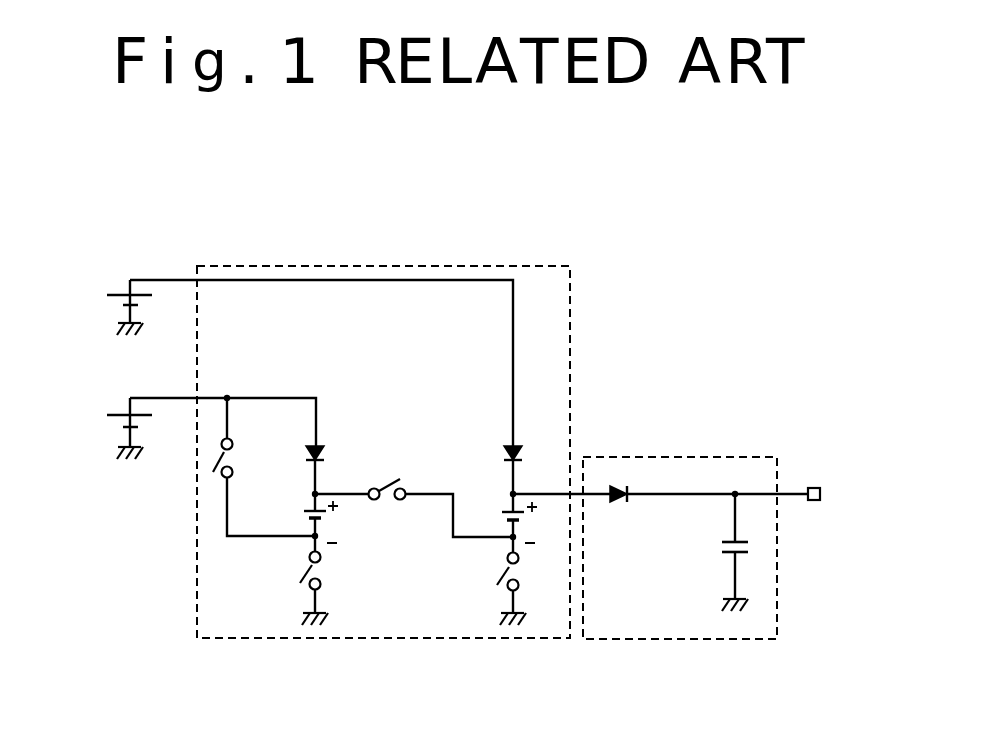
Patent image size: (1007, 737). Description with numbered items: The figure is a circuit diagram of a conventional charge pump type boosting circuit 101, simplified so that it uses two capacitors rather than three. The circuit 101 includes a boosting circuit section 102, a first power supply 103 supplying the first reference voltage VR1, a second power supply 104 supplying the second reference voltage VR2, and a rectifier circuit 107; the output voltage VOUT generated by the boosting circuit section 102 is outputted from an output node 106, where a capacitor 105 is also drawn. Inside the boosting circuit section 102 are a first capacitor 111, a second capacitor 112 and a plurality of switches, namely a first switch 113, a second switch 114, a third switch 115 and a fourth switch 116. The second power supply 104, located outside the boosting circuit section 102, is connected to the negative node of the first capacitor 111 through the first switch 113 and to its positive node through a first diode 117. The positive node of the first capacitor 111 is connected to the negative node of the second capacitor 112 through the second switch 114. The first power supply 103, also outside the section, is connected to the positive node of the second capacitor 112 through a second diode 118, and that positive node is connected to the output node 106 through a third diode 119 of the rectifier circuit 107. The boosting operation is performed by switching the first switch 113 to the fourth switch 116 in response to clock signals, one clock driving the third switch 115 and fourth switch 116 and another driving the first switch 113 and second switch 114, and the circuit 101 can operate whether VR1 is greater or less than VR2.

The charge pump type boosting circuit 101 is at (785, 322).
The boosting circuit section 102 is at (443, 265).
The first power supply 103 is at (118, 292).
The second power supply 104 is at (118, 412).
The output capacitor 105 is at (752, 547).
The output node 106 is at (815, 485).
The rectifier circuit 107 is at (677, 456).
The first capacitor 111 is at (303, 513).
The second capacitor 112 is at (503, 508).
The first switch 113 is at (232, 457).
The second switch 114 is at (395, 480).
The third switch 115 is at (317, 568).
The fourth switch 116 is at (498, 572).
The first diode 117 is at (320, 443).
The second diode 118 is at (508, 445).
The third diode 119 is at (620, 488).